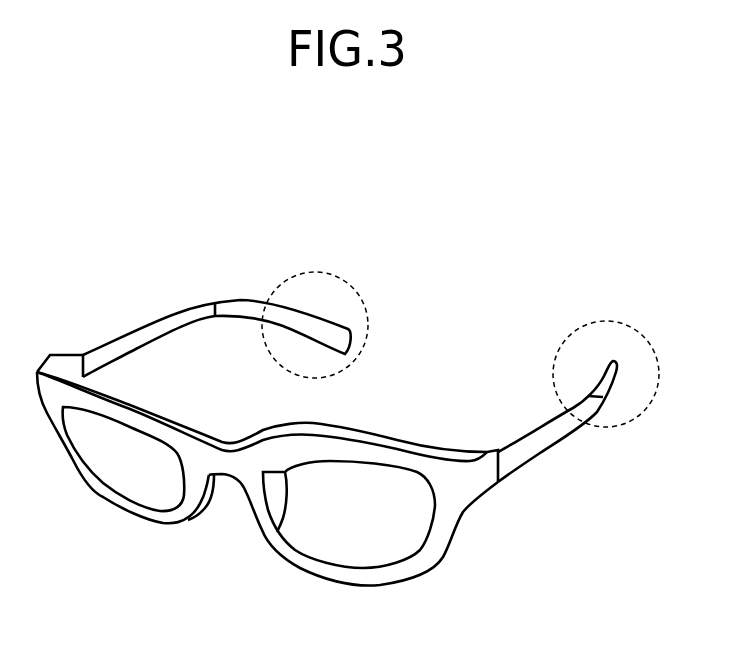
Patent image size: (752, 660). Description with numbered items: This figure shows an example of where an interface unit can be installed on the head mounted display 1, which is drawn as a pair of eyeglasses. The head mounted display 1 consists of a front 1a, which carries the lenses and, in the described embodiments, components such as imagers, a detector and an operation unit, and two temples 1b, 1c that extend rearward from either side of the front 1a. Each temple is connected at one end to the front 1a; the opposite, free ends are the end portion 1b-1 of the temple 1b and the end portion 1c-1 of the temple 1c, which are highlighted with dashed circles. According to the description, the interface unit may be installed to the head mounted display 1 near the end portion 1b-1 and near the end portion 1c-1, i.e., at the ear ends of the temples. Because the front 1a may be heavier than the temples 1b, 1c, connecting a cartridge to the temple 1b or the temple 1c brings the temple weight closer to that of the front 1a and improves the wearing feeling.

The head mounted display 1 is at (471, 300).
The front 1a is at (377, 437).
The temple 1b is at (165, 323).
The end portion 1b-1 is at (317, 272).
The temple 1c is at (510, 452).
The end portion 1c-1 is at (607, 321).